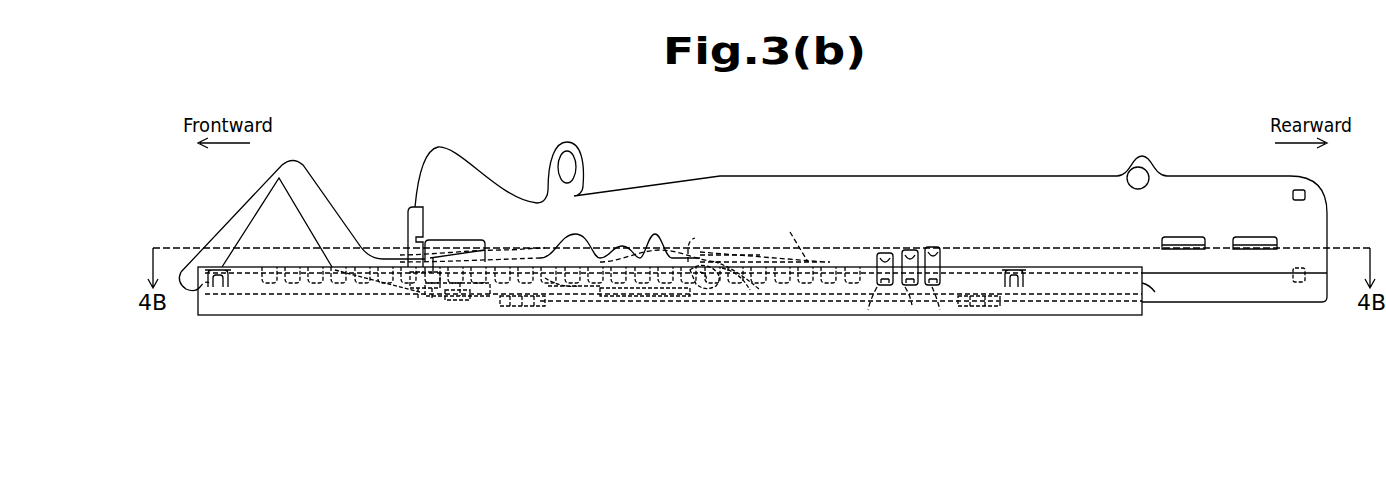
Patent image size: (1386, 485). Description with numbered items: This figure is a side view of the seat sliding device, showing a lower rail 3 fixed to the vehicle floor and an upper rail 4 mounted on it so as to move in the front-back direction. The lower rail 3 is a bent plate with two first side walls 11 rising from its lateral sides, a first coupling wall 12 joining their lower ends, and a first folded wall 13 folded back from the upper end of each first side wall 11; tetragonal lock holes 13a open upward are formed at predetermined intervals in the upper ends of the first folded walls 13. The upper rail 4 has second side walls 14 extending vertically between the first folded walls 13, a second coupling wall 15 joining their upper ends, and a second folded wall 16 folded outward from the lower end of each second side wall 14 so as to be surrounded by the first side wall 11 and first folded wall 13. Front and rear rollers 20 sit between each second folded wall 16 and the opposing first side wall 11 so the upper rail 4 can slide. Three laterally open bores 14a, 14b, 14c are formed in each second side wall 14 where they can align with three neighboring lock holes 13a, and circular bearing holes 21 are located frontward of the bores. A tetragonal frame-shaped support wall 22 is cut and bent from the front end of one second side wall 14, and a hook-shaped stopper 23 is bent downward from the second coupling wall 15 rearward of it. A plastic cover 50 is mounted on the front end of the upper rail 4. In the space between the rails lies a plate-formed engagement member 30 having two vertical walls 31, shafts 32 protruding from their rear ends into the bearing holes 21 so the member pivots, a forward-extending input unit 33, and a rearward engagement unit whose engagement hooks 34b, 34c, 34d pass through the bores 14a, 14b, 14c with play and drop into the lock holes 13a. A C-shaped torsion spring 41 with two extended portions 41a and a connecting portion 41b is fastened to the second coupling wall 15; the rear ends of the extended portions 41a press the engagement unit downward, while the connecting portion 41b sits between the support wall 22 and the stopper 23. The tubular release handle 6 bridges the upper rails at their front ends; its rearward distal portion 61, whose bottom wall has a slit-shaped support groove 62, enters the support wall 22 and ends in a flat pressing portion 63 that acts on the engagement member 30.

The lower rail 3 is at (1145, 290).
The upper rail 4 is at (1091, 175).
The release handle 6 is at (322, 194).
The first side wall 11 is at (1108, 283).
The first coupling wall 12 is at (1094, 315).
The first folded wall 13 is at (1040, 300).
The lock hole 13a is at (806, 262).
The second side wall 14 is at (1196, 274).
The bore 14a is at (934, 250).
The bore 14b is at (910, 251).
The bore 14c is at (884, 254).
The second coupling wall 15 is at (1218, 246).
The second folded wall 16 is at (1253, 300).
The roller 20 is at (513, 318).
The bearing hole 21 is at (726, 298).
The support wall 22 is at (442, 252).
The stopper 23 is at (548, 240).
The engagement member 30 is at (620, 298).
The vertical wall 31 is at (658, 232).
The shaft 32 is at (697, 292).
The input unit 33 is at (556, 298).
The engagement hook 34b is at (940, 310).
The engagement hook 34c is at (911, 305).
The engagement hook 34d is at (878, 310).
The torsion spring 41 is at (646, 232).
The extended portion 41a is at (688, 250).
The connecting portion 41b is at (452, 302).
The cover 50 is at (411, 217).
The distal portion 61 is at (412, 300).
The support groove 62 is at (440, 300).
The pressing portion 63 is at (518, 247).